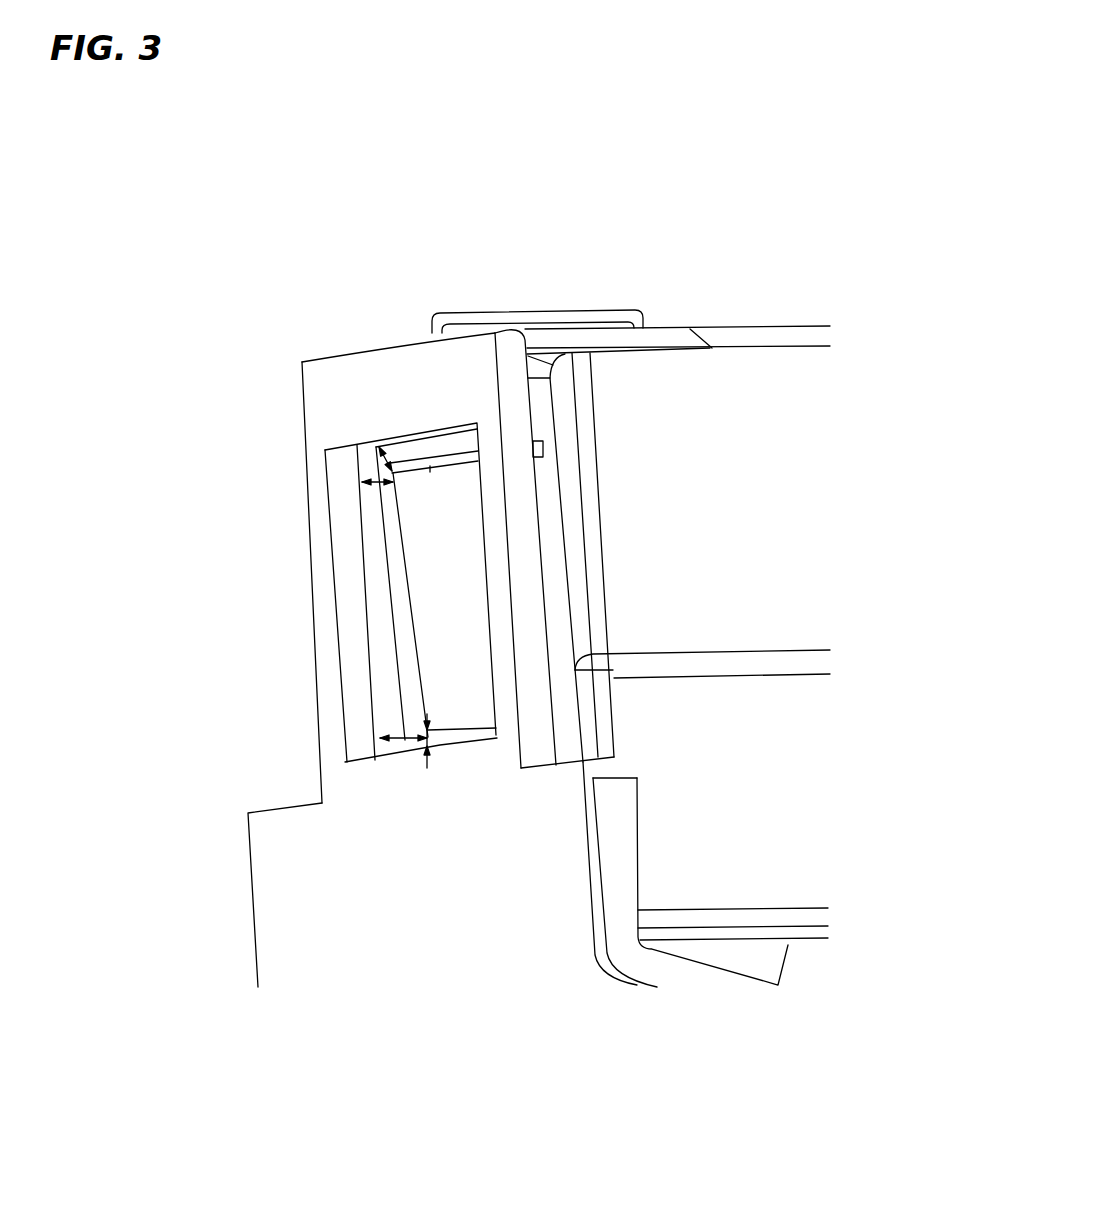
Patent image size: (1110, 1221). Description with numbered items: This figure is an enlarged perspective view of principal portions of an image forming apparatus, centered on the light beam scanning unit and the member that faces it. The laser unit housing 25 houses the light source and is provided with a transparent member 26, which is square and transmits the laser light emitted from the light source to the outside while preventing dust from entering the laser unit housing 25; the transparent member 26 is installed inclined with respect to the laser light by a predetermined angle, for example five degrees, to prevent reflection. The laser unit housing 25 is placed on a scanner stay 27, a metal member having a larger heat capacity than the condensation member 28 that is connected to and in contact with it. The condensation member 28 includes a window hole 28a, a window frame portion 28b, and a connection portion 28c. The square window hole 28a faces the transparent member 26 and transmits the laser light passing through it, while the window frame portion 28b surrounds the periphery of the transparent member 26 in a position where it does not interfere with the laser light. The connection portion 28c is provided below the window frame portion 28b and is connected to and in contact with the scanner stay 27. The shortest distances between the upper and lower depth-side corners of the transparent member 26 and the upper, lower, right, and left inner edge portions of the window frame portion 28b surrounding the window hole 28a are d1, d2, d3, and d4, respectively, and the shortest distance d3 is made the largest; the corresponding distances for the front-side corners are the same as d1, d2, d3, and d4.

The laser unit housing 25 is at (728, 327).
The transparent member 26 is at (440, 550).
The scanner stay 27 is at (630, 957).
The condensation member 28 is at (300, 416).
The window hole 28a is at (385, 648).
The window frame portion 28b is at (343, 530).
The connection portion 28c is at (308, 893).
The shortest distance d1 is at (380, 445).
The shortest distance d2 is at (378, 483).
The shortest distance d3 is at (383, 738).
The shortest distance d4 is at (430, 745).